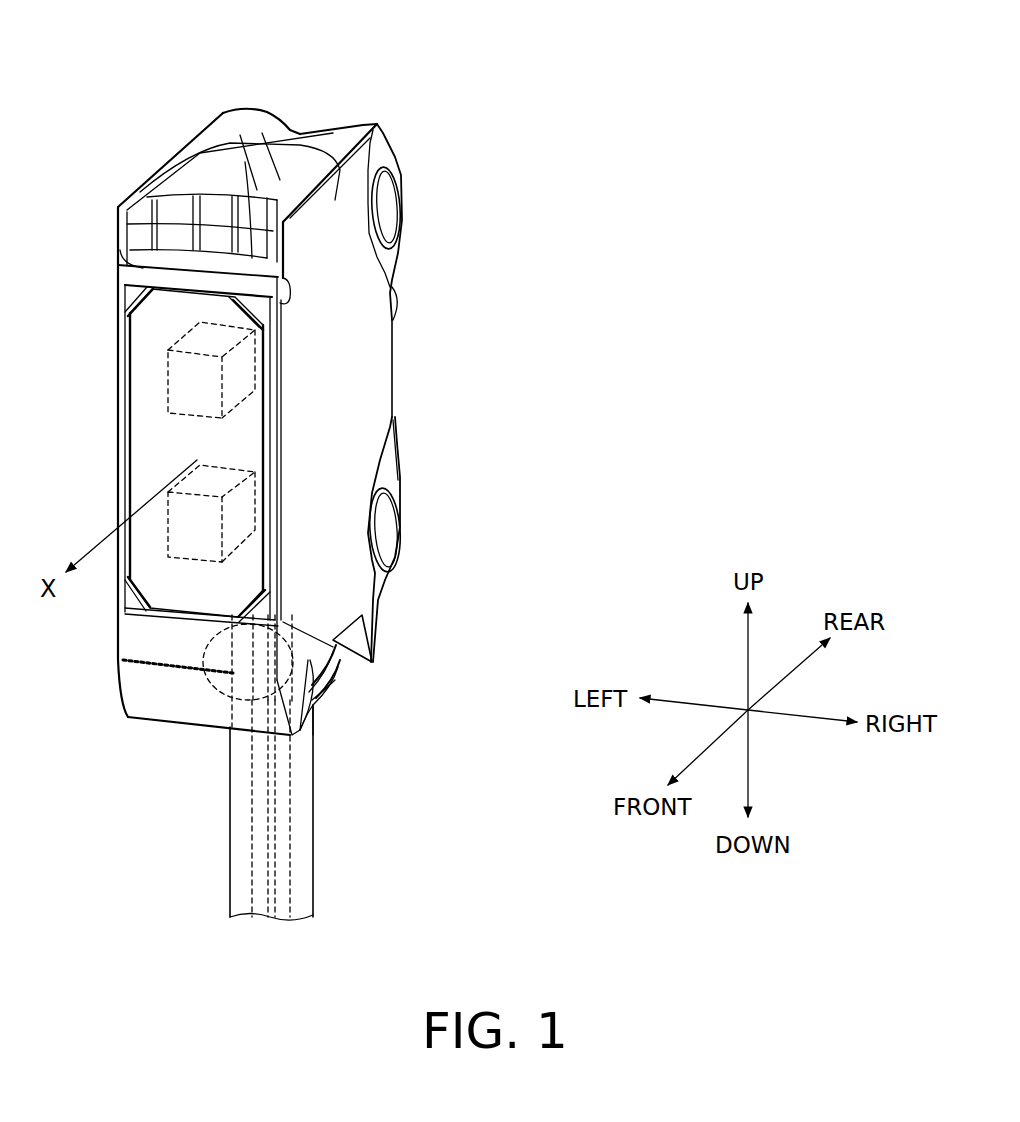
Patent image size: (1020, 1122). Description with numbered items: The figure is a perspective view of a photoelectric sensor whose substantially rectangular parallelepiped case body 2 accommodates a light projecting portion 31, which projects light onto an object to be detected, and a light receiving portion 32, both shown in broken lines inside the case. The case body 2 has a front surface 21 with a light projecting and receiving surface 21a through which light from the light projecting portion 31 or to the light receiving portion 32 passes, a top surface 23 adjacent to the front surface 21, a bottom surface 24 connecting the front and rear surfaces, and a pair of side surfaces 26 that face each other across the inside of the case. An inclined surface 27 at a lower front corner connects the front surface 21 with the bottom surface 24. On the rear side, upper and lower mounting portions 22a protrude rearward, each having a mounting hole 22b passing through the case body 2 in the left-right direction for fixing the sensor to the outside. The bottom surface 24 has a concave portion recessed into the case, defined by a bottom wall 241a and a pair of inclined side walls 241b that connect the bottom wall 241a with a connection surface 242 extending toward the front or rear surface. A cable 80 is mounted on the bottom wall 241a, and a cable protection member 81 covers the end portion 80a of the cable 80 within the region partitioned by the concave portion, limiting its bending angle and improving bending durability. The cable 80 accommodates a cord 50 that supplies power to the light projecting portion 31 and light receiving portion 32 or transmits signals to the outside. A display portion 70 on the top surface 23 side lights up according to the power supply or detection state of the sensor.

The case body 2 is at (105, 192).
The display portion 70 is at (197, 187).
The top surface 23 is at (287, 160).
The side surfaces 26 is at (353, 365).
The mounting portions 22a is at (400, 253).
The mounting hole 22b is at (385, 207).
The front surface 21 is at (140, 288).
The light projecting and receiving surface 21a is at (157, 442).
The light projecting portion 31 is at (187, 387).
The light receiving portion 32 is at (187, 523).
The inclined surface 27 is at (213, 700).
The bottom surface 24 is at (360, 680).
The bottom wall 241a is at (343, 633).
The side walls 241b is at (355, 650).
The connection surface 242 is at (335, 658).
The cable protection member 81 is at (330, 683).
The end portion of the cable 80a is at (317, 700).
The cable 80 is at (322, 874).
The cord 50 is at (283, 857).